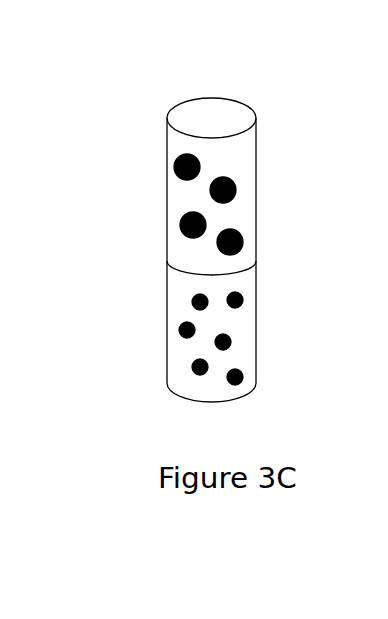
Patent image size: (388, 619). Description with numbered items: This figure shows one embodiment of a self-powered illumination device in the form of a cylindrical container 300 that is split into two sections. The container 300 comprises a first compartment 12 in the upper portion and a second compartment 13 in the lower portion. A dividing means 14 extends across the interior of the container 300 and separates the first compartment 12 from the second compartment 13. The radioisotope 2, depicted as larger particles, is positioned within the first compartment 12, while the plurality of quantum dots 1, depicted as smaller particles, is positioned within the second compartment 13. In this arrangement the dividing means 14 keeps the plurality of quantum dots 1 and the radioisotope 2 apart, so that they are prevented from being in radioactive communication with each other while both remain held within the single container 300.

The container 300 is at (277, 80).
The first compartment 12 is at (295, 122).
The second compartment 13 is at (295, 268).
The radioisotope 2 is at (172, 168).
The plurality of quantum dots 1 is at (175, 337).
The dividing means 14 is at (170, 264).